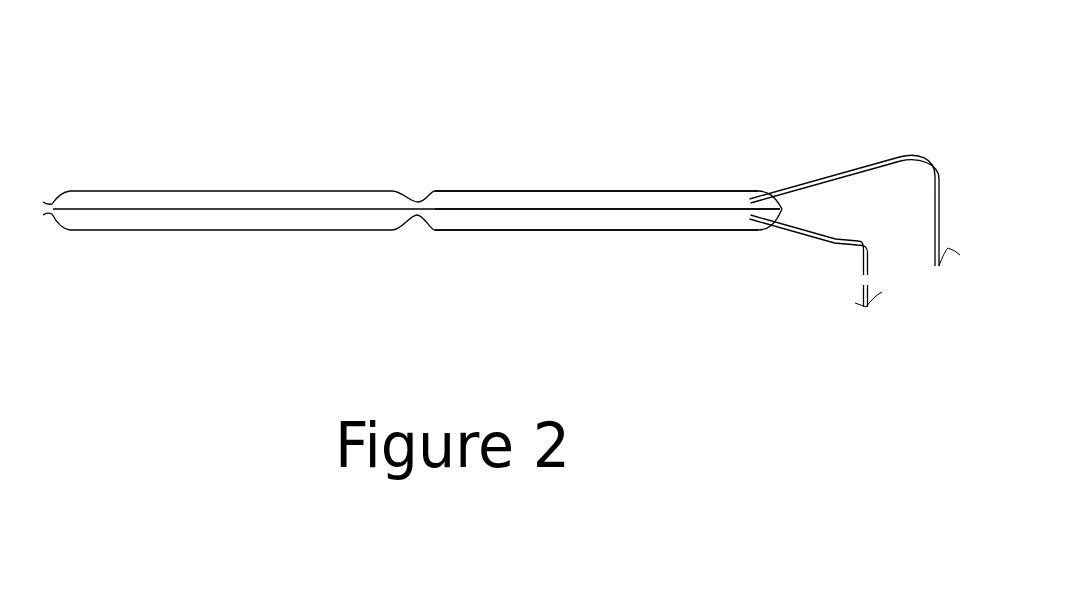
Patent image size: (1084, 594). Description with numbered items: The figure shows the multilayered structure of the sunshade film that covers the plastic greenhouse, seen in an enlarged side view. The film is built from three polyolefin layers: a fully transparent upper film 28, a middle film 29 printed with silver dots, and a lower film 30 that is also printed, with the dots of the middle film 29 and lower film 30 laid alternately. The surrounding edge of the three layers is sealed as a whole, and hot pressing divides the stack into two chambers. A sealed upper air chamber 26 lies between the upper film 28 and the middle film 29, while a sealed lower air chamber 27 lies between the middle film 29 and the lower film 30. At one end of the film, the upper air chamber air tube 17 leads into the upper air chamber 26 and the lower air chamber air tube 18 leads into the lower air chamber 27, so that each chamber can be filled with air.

The upper air chamber air tube 17 is at (886, 143).
The lower air chamber air tube 18 is at (840, 266).
The upper air chamber 26 is at (564, 190).
The lower air chamber 27 is at (601, 243).
The upper film 28 is at (172, 180).
The middle film 29 is at (290, 192).
The lower film 30 is at (247, 242).